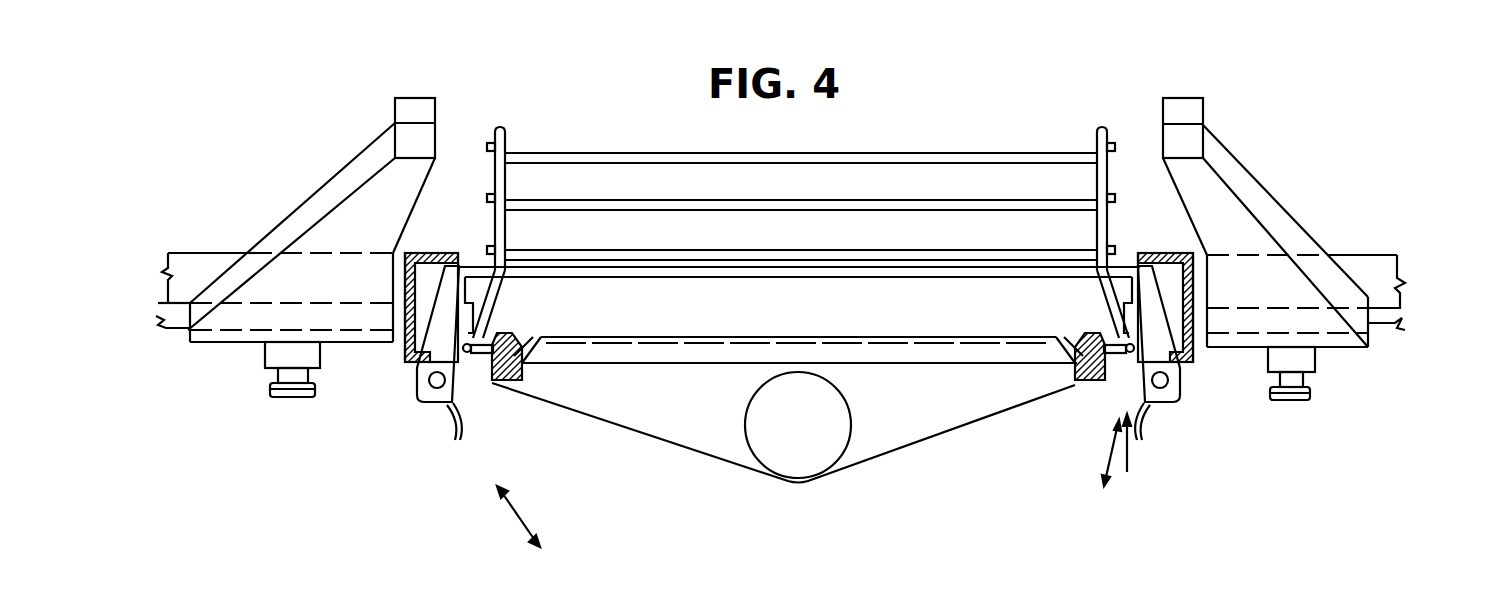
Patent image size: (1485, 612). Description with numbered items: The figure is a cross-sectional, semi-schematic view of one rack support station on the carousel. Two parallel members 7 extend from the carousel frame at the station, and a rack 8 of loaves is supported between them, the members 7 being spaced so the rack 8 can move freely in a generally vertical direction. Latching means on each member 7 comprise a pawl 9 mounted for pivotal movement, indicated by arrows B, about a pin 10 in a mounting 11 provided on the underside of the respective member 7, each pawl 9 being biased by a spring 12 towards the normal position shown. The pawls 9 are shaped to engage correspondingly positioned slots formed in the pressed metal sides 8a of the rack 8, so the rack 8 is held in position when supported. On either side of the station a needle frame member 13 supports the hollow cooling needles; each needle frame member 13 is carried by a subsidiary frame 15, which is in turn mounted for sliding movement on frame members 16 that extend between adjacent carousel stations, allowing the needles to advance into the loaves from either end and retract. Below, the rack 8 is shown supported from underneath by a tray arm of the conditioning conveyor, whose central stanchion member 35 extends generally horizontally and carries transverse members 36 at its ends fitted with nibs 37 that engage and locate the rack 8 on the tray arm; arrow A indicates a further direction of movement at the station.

The parallel member 7 is at (447, 253).
The rack 8 is at (862, 205).
The pressed metal side 8a is at (505, 335).
The pawl 9 is at (470, 405).
The pin 10 is at (437, 388).
The mounting 11 is at (403, 380).
The spring 12 is at (450, 440).
The needle frame member 13 is at (422, 98).
The subsidiary frame 15 is at (185, 332).
The frame member 16 is at (203, 252).
The central stanchion member 35 is at (815, 455).
The transverse member 36 is at (918, 432).
The nib 37 is at (520, 385).
The direction A is at (1126, 458).
The arrows B is at (1100, 480).